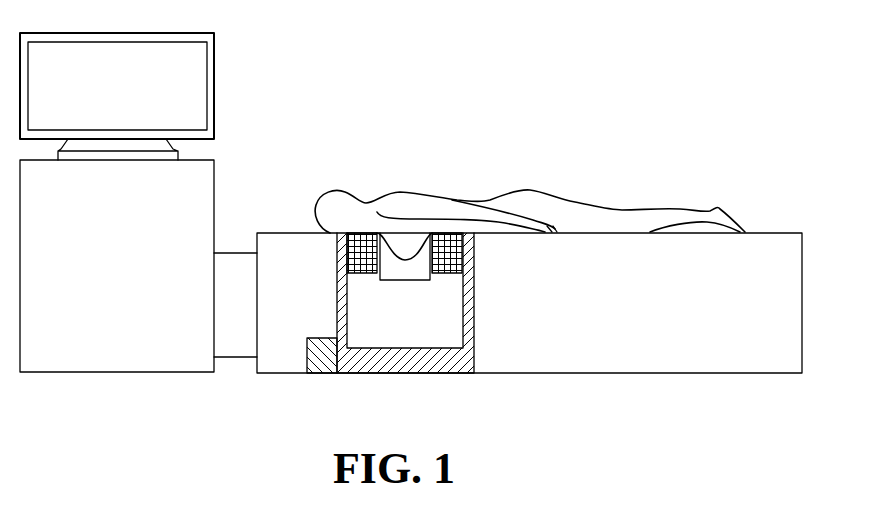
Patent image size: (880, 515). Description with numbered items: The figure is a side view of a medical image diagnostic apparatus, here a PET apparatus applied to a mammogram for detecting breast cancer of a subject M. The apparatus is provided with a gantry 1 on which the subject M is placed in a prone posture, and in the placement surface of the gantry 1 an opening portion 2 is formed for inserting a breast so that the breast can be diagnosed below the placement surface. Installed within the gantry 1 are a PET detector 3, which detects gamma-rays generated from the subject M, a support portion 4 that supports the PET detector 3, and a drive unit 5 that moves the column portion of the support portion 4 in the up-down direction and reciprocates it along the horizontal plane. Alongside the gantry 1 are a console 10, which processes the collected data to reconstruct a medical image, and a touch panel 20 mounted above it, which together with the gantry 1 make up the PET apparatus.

The gantry 1 is at (755, 374).
The opening portion 2 is at (424, 268).
The PET detector 3 is at (363, 268).
The support portion 4 is at (395, 367).
The drive unit 5 is at (325, 367).
The console 10 is at (160, 373).
The touch panel 20 is at (167, 32).
The subject M is at (477, 199).